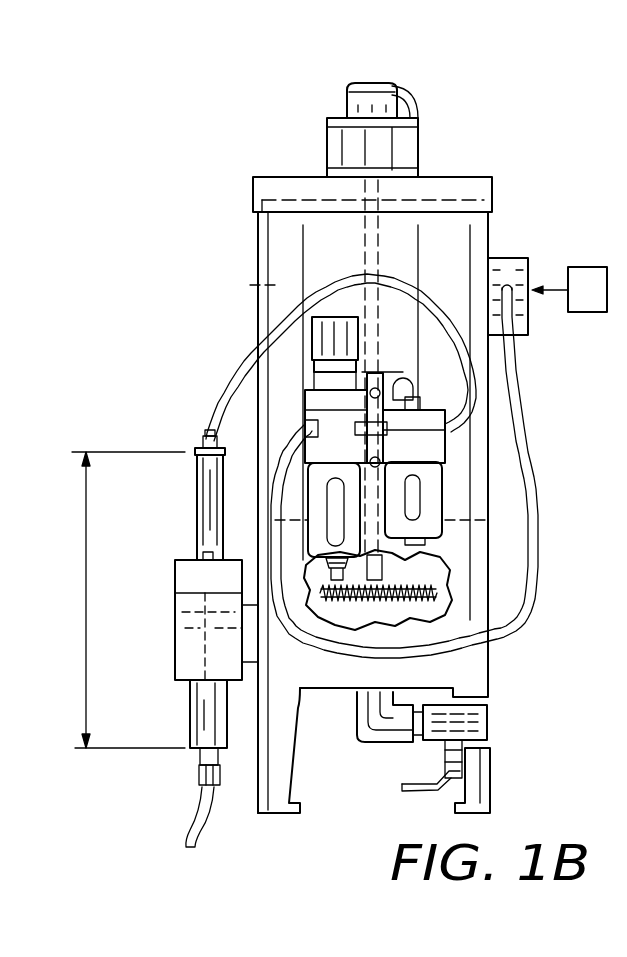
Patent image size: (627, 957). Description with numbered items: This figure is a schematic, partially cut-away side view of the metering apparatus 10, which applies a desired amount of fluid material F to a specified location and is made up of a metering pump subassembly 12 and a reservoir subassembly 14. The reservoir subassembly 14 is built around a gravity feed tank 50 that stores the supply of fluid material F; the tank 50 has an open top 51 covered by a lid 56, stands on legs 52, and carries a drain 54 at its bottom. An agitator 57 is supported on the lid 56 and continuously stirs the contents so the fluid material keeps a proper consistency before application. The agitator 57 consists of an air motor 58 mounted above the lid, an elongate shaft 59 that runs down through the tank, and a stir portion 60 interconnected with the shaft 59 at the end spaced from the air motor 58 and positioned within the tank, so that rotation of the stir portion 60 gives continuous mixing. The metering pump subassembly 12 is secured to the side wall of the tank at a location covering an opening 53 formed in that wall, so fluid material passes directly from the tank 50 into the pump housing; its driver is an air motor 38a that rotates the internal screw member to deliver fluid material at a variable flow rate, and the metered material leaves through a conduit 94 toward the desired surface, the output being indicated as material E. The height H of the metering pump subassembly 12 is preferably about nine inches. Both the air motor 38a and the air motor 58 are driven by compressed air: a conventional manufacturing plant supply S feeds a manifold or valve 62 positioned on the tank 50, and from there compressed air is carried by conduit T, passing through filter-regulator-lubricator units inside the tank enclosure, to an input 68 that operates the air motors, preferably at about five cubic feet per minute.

The metering apparatus 10 is at (203, 80).
The reservoir subassembly 14 is at (240, 237).
The tank 50 is at (278, 290).
The open top 51 is at (450, 192).
The lid 56 is at (292, 177).
The agitator 57 is at (428, 79).
The air motor 58 is at (410, 150).
The elongate shaft 59 is at (388, 247).
The stir portion 60 is at (440, 598).
The valve 62 is at (527, 330).
The input 68 is at (207, 441).
The air motor 38a is at (198, 502).
The metering pump subassembly 12 is at (160, 652).
The opening 53 is at (270, 632).
The drain 54 is at (400, 756).
The legs 52 is at (495, 806).
The conduit 94 is at (198, 815).
The conduit T is at (416, 104).
The manufacturing plant supply S is at (569, 289).
The height of the metering pump subassembly H is at (86, 586).
The fluid material F is at (452, 665).
The extrudate material E is at (188, 853).